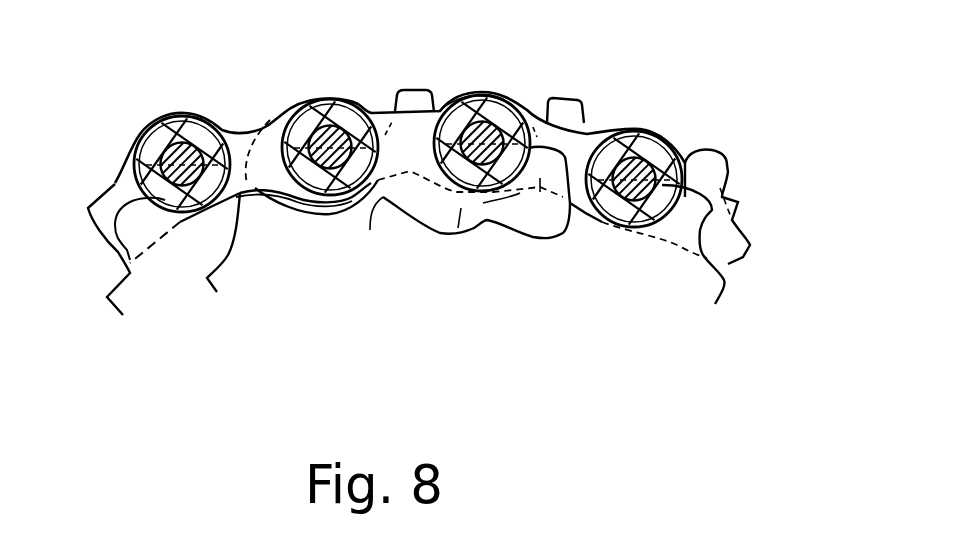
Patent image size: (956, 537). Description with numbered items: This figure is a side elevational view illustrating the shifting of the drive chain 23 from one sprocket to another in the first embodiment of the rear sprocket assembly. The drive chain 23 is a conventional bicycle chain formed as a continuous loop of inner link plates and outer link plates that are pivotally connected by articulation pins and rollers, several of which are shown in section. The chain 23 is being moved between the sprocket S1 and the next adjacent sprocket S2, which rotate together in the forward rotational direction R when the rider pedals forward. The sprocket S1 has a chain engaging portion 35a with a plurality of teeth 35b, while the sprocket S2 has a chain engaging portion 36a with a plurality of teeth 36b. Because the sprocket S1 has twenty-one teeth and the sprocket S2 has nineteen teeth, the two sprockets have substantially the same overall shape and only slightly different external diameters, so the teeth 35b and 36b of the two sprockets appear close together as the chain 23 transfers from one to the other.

The drive chain 23 is at (556, 123).
The chain engaging portion 35a is at (158, 253).
The teeth 35b is at (130, 210).
The chain engaging portion 36a is at (460, 217).
The teeth 36b is at (370, 230).
The sprocket S1 is at (728, 149).
The sprocket S2 is at (720, 269).
The forward rotational direction R is at (758, 265).